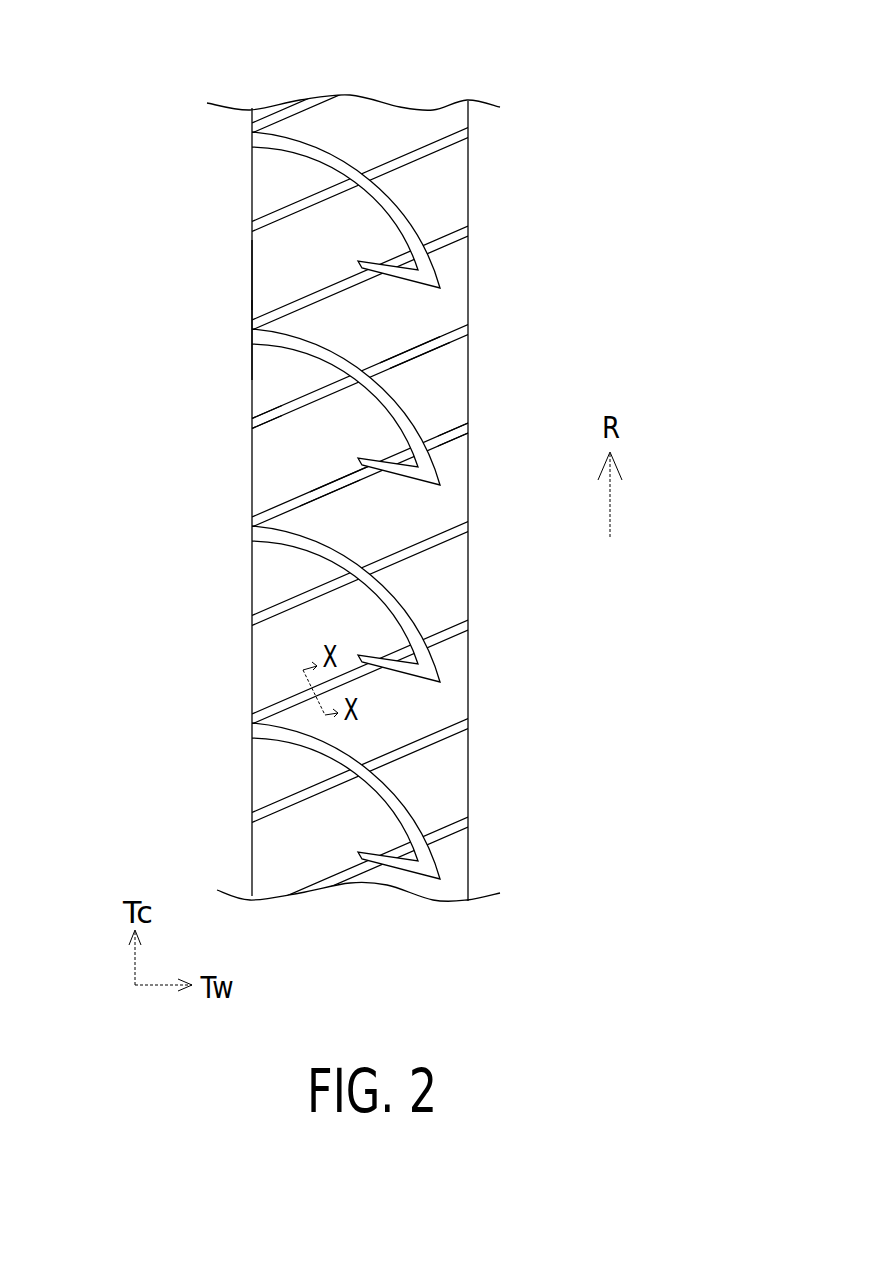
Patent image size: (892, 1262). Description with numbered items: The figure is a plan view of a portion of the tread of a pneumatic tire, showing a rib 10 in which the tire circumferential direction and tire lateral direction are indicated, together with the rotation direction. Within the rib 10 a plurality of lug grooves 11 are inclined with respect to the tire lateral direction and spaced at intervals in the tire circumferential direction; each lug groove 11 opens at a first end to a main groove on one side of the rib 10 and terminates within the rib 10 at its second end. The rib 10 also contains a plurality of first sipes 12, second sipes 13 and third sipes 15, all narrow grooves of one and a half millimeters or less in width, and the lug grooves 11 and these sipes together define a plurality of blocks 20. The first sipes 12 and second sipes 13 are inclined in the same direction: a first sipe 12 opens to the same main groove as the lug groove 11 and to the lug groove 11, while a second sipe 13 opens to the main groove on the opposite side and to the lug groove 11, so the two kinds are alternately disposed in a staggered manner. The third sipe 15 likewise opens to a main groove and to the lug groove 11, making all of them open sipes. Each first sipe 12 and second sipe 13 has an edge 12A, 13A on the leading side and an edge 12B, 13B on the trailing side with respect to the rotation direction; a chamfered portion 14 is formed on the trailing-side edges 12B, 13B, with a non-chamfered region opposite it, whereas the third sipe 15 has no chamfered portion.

The rib 10 is at (255, 80).
The lug groove 11 is at (257, 340).
The first sipe 12 is at (280, 498).
The edge on the leading side of the first sipe 12A is at (327, 485).
The edge on the trailing side of the first sipe 12B is at (343, 472).
The second sipe 13 is at (453, 323).
The edge on the leading side of the second sipe 13A is at (410, 352).
The edge on the trailing side of the second sipe 13B is at (420, 362).
The chamfered portion 14 is at (283, 533).
The third sipe 15 is at (257, 413).
The block 20 is at (283, 269).